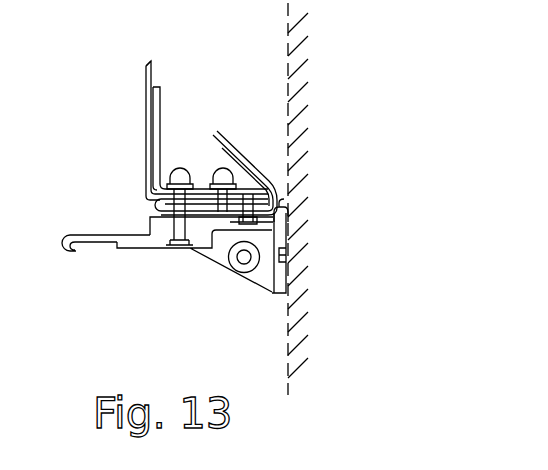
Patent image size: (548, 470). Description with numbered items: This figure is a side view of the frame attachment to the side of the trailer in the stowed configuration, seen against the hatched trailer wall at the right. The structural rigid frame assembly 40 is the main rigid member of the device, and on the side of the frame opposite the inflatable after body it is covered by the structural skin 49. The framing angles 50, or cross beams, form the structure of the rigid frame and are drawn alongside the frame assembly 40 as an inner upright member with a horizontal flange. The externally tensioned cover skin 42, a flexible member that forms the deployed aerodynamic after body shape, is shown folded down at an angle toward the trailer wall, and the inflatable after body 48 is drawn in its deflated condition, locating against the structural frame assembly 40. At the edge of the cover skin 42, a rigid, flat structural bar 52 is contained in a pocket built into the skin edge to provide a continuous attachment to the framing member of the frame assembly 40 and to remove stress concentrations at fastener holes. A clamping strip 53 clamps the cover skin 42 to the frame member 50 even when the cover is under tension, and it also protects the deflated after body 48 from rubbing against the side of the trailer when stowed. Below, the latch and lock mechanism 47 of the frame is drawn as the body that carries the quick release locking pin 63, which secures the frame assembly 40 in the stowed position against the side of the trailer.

The structural rigid frame assembly 40 is at (152, 76).
The structural skin 49 is at (145, 86).
The framing angles 50 is at (161, 100).
The cover skin 42 is at (225, 137).
The inflatable after body 48 is at (242, 147).
The structural bar 52 is at (148, 205).
The clamping strip 53 is at (289, 208).
The latch and lock mechanism 47 is at (148, 246).
The quick release locking pin 63 is at (222, 260).